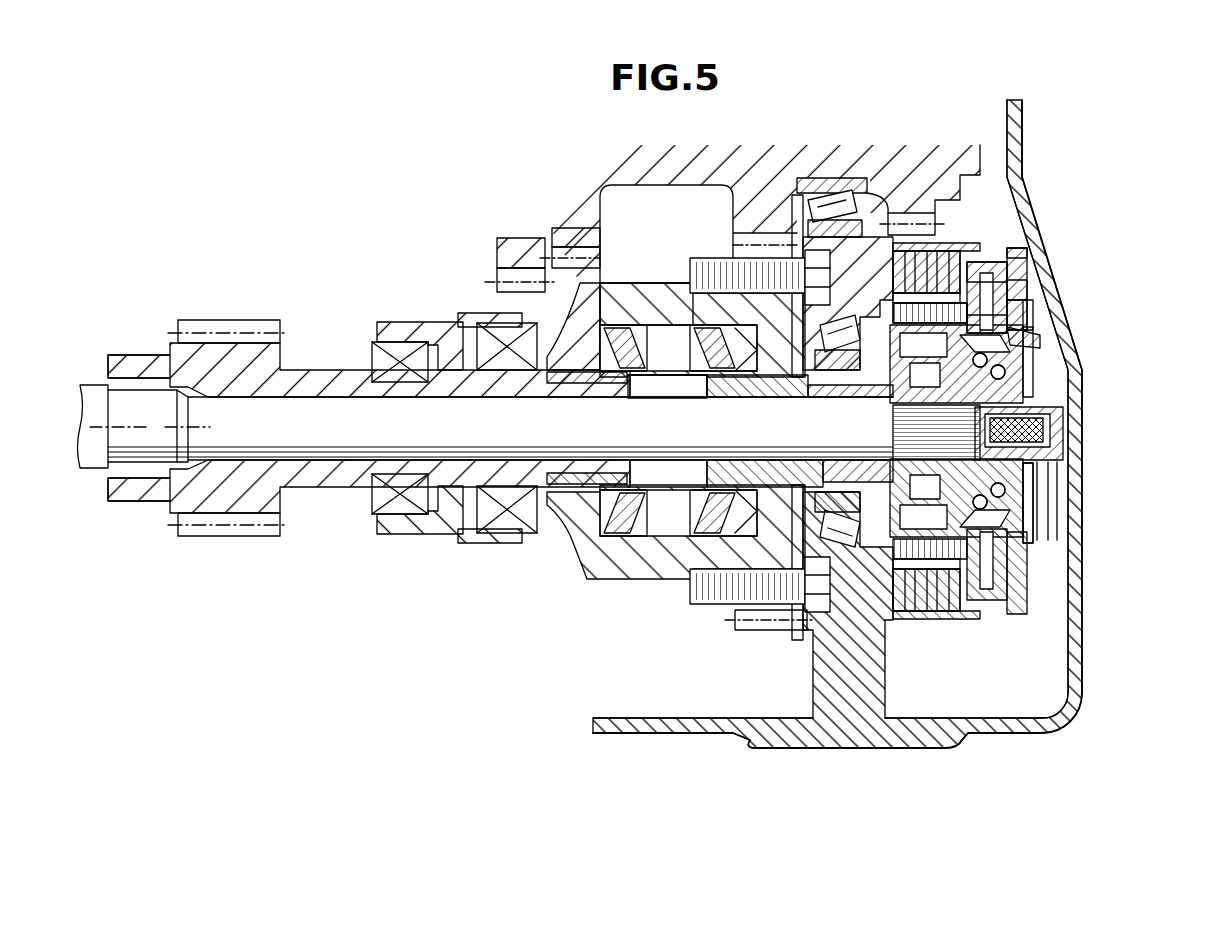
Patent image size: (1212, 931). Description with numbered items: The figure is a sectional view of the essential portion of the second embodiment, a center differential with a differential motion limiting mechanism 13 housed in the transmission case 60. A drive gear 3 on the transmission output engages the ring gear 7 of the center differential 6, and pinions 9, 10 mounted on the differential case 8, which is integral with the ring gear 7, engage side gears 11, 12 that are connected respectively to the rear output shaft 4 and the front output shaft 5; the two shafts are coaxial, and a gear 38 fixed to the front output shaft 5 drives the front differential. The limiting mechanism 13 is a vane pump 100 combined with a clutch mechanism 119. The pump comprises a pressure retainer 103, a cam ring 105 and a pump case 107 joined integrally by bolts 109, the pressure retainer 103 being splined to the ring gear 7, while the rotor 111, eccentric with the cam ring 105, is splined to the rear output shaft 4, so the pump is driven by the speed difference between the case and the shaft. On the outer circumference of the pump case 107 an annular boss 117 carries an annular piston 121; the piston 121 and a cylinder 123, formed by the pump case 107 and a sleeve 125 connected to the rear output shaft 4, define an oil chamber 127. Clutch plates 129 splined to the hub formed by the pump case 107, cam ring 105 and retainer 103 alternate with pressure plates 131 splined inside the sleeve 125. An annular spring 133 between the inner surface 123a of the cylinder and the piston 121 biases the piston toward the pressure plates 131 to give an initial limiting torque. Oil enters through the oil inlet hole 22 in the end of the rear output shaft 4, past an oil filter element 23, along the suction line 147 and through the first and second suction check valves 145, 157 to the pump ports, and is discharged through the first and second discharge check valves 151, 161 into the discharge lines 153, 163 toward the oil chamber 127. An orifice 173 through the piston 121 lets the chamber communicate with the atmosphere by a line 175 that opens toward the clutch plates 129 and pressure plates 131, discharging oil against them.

The drive gear 3 is at (735, 214).
The rear output shaft 4 is at (332, 405).
The front output shaft 5 is at (140, 355).
The center differential 6 is at (618, 266).
The ring gear 7 is at (736, 258).
The differential case 8 is at (634, 323).
The pinion 9 is at (547, 357).
The pinion 10 is at (632, 522).
The side gear 11 is at (677, 320).
The side gear 12 is at (582, 522).
The differential motion limiting mechanism 13 is at (949, 236).
The oil inlet hole 22 is at (1050, 422).
The oil filter element 23 is at (1056, 446).
The gear 38 is at (245, 320).
The transmission case 60 is at (1082, 592).
The vane pump 100 is at (890, 412).
The pressure retainer 103 is at (823, 386).
The cam ring 105 is at (920, 240).
The pump case 107 is at (993, 595).
The bolt 109 is at (903, 305).
The rotor 111 is at (888, 456).
The annular boss 117 is at (993, 277).
The clutch mechanism 119 is at (880, 238).
The annular piston 121 is at (1007, 307).
The cylinder 123 is at (1003, 283).
The inner surface of cylinder 123a is at (1027, 310).
The sleeve 125 is at (1003, 257).
The oil chamber 127 is at (1010, 323).
The clutch plate 129 is at (978, 242).
The pressure plate 131 is at (1003, 224).
The annular spring 133 is at (1020, 290).
The first suction check valve 145 is at (1062, 500).
The suction line 147 is at (1052, 480).
The first discharge check valve 151 is at (1062, 375).
The discharge line 153 is at (1065, 352).
The second suction check valve 157 is at (1028, 503).
The second discharge check valve 161 is at (998, 490).
The discharge line 163 is at (998, 372).
The orifice 173 is at (1040, 362).
The line 175 is at (1017, 343).